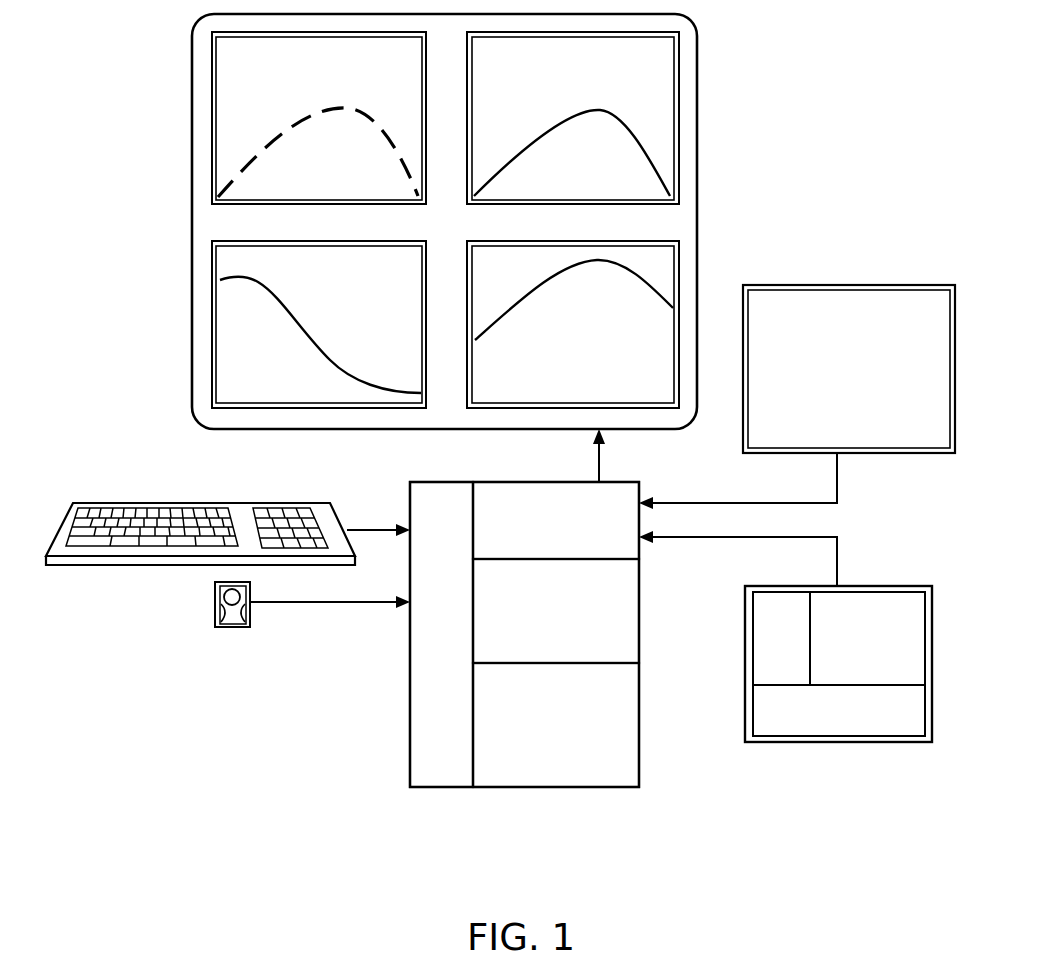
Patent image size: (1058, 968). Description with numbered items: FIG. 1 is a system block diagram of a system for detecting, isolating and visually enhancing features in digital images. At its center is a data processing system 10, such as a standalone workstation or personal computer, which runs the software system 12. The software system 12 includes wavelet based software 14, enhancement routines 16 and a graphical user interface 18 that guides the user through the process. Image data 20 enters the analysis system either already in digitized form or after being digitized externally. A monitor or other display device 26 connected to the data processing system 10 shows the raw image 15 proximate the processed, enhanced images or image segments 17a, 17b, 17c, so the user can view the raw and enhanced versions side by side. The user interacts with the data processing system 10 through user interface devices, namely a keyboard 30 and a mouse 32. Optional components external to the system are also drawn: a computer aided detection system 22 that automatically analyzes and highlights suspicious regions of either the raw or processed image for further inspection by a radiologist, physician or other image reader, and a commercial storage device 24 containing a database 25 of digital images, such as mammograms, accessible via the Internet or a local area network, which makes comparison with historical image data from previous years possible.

The data processing system 10 is at (410, 745).
The software system 12 is at (539, 538).
The wavelet based software 14 is at (539, 625).
The raw image 15 is at (277, 147).
The enhancement routines 16 is at (539, 740).
The processed, enhanced image or image segment 17a is at (650, 155).
The processed, enhanced image or image segment 17b is at (237, 347).
The processed, enhanced image or image segment 17c is at (655, 292).
The graphical user interface 18 is at (426, 645).
The image data 20 is at (828, 725).
The computer aided detection system 22 is at (896, 285).
The commercial storage device 24 is at (859, 653).
The database 25 is at (766, 653).
The monitor or display device 26 is at (192, 217).
The keyboard 30 is at (100, 508).
The mouse 32 is at (232, 628).